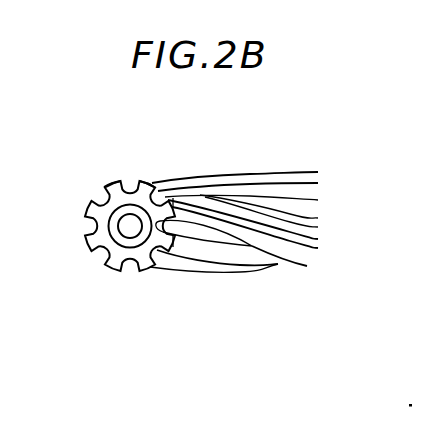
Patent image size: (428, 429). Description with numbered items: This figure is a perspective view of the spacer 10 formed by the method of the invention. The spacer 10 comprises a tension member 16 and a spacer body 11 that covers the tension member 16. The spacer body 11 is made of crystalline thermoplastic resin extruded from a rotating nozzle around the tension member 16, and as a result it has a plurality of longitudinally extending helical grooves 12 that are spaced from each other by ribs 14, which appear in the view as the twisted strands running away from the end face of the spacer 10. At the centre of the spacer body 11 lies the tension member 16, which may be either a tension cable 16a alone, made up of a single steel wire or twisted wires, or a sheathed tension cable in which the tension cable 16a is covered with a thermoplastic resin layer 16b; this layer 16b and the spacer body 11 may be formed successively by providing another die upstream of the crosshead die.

The spacer 10 is at (234, 287).
The spacer body 11 is at (97, 215).
The helical grooves 12 is at (158, 152).
The ribs 14 is at (107, 152).
The tension member 16 is at (96, 264).
The tension cable 16a is at (108, 266).
The thermoplastic resin layer 16b is at (87, 250).